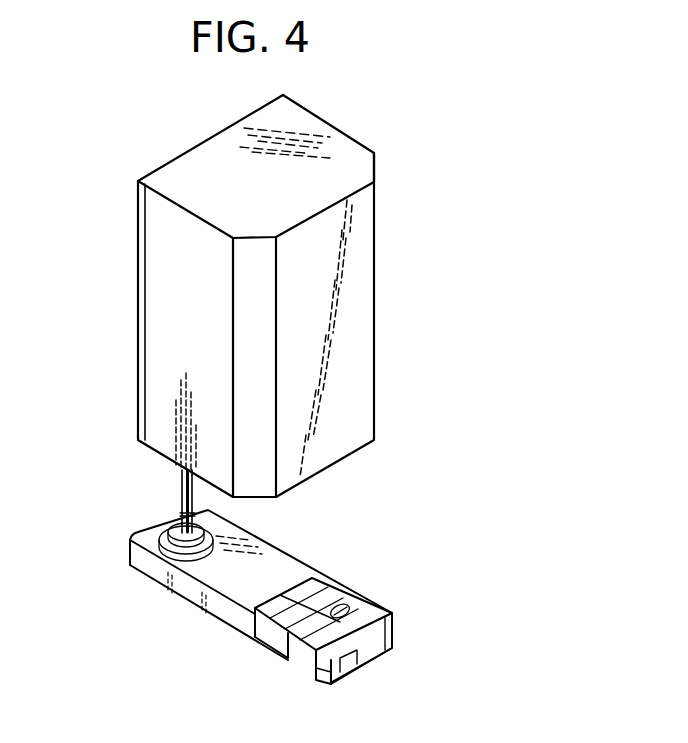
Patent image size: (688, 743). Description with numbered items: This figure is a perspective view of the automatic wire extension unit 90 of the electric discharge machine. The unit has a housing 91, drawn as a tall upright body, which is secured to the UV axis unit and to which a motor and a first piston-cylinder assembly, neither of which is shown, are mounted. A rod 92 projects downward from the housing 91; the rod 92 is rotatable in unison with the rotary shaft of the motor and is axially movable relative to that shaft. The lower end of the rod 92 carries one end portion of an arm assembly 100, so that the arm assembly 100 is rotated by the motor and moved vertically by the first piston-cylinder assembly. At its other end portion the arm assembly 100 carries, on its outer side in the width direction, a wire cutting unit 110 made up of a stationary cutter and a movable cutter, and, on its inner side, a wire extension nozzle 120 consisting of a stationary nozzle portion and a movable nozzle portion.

The automatic wire extension unit 90 is at (408, 159).
The housing 91 is at (348, 298).
The rod 92 is at (181, 488).
The arm assembly 100 is at (337, 558).
The wire cutting unit 110 is at (322, 630).
The wire extension nozzle 120 is at (362, 612).